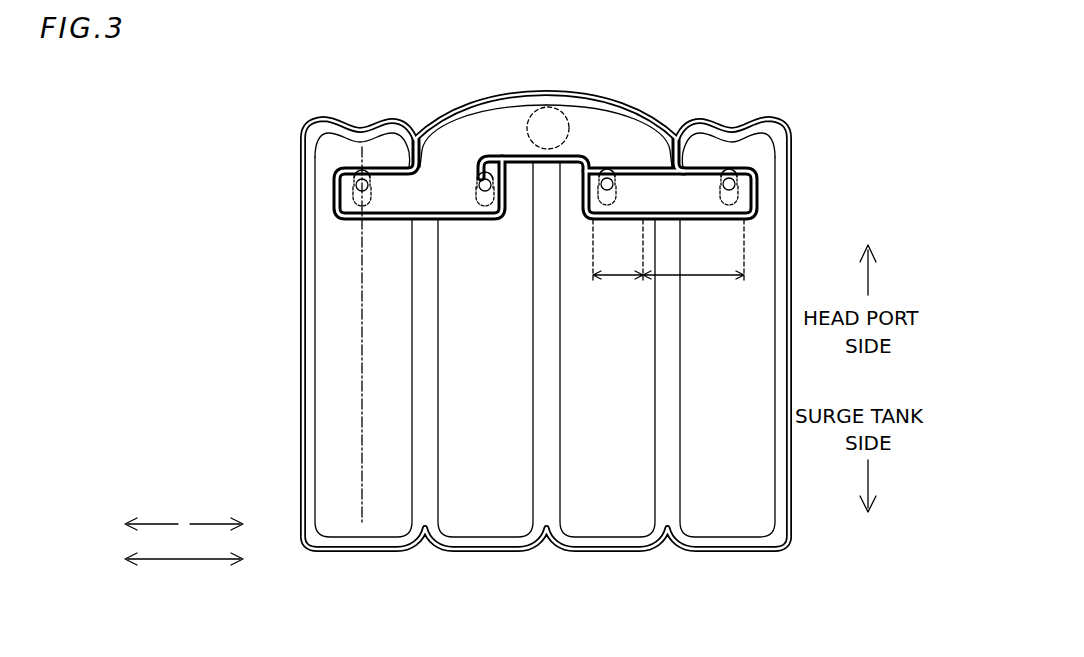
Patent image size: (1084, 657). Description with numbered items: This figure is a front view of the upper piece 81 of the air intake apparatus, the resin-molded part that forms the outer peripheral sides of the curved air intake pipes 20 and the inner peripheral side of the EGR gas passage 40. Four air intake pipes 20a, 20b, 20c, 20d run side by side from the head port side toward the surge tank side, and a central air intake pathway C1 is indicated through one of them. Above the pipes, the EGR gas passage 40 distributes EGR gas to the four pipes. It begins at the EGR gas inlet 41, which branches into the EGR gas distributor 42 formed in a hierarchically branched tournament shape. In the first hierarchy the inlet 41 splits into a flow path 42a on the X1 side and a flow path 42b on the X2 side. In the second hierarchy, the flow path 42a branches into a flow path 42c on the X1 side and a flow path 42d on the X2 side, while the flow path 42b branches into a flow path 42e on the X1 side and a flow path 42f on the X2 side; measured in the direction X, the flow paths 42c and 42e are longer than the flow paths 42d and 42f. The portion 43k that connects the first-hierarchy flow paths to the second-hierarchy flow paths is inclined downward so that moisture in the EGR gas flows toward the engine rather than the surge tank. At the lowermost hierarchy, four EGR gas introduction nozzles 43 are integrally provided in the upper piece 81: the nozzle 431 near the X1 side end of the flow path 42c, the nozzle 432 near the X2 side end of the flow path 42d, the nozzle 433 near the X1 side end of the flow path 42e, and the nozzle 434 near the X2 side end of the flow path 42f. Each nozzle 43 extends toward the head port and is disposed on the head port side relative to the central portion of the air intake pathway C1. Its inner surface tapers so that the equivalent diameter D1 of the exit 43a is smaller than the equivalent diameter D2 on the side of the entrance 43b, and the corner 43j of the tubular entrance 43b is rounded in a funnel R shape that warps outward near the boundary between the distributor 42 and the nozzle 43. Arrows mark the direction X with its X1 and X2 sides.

The upper piece 81 is at (229, 79).
The EGR gas passage 40 is at (546, 284).
The EGR gas inlet 41 is at (559, 106).
The EGR gas distributor 42 is at (517, 112).
The flow path of first hierarchy (X1 side) 42a is at (602, 112).
The flow path of first hierarchy (X2 side) 42b is at (457, 117).
The flow path of second hierarchy (X1 side) 42c is at (721, 198).
The flow path of second hierarchy (X2 side) 42d is at (601, 195).
The flow path of second hierarchy (X1 side) 42e is at (489, 198).
The flow path of second hierarchy (X2 side) 42f is at (351, 206).
The EGR gas introduction nozzle 43 is at (545, 177).
The EGR gas introduction nozzle 431 is at (725, 174).
The EGR gas introduction nozzle 432 is at (581, 181).
The EGR gas introduction nozzle 433 is at (488, 194).
The EGR gas introduction nozzle 434 is at (350, 175).
The exit 43a is at (358, 172).
The entrance 43b is at (372, 202).
The corner 43j is at (352, 190).
The portion 43k is at (403, 143).
The air intake pipe 20 is at (545, 397).
The air intake pipe 20a is at (715, 533).
The air intake pipe 20b is at (618, 527).
The air intake pipe 20c is at (505, 525).
The air intake pipe 20d is at (377, 510).
The air intake pathway C1 is at (362, 348).
The equivalent diameter of exit D1 is at (693, 260).
The equivalent diameter on entrance side D2 is at (618, 260).
The direction X is at (184, 551).
The X1 side X1 is at (216, 515).
The X2 side X2 is at (151, 515).